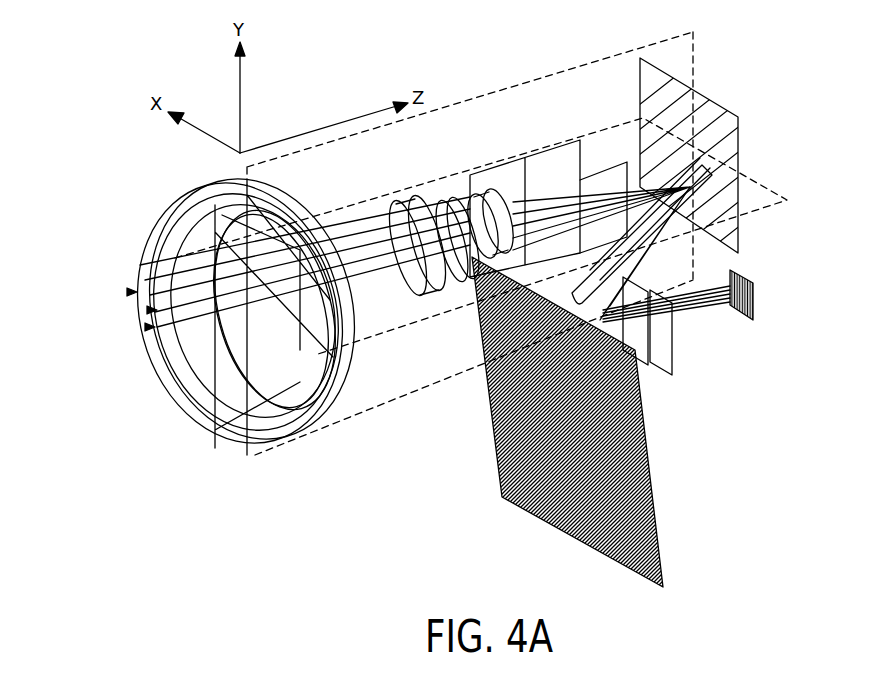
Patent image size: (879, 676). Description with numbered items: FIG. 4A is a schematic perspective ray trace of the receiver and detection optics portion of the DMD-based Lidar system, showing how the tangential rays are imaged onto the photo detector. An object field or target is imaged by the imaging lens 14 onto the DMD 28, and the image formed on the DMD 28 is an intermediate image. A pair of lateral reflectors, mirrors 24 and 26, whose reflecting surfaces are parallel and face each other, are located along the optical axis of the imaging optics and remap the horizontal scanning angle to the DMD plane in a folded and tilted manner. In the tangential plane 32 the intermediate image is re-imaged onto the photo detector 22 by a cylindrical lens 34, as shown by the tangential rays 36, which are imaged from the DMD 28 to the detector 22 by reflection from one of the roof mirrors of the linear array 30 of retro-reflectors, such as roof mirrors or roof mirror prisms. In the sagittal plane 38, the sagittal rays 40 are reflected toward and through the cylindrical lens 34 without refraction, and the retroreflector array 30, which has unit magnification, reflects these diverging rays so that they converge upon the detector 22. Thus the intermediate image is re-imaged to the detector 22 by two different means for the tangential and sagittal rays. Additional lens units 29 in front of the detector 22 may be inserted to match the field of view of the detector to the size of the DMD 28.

The imaging lens 14 is at (288, 440).
The photo detector 22 is at (755, 316).
The mirror 24 is at (592, 173).
The mirror 26 is at (493, 170).
The DMD 28 is at (741, 170).
The lens units 29 is at (673, 352).
The linear array of retro-reflectors 30 is at (555, 530).
The tangential plane 32 is at (699, 57).
The cylindrical lens 34 is at (690, 282).
The tangential rays 36 is at (143, 267).
The sagittal plane 38 is at (637, 133).
The sagittal rays 40 is at (147, 310).